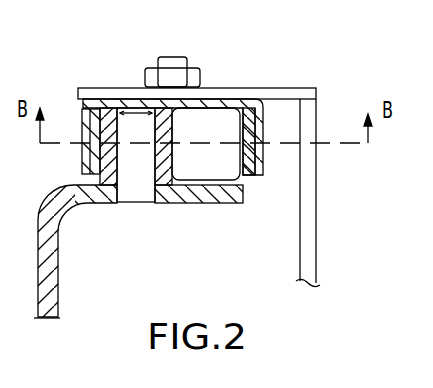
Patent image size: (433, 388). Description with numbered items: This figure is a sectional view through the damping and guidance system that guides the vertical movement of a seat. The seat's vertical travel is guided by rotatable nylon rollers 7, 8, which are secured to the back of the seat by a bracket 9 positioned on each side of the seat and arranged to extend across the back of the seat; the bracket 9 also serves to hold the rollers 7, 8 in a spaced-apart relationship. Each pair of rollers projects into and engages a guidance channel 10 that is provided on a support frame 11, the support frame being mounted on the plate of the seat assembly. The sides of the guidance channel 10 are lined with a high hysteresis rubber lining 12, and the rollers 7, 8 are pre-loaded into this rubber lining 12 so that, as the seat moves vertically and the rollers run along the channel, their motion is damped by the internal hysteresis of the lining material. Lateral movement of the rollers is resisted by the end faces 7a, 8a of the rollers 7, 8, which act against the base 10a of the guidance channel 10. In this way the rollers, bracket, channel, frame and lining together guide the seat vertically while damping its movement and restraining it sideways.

The rotatable nylon roller 7 is at (208, 177).
The end face of roller 7a is at (216, 113).
The rotatable nylon roller 8 is at (175, 128).
The end face of roller 8a is at (112, 108).
The bracket 9 is at (50, 255).
The guidance channel 10 is at (211, 100).
The base of guidance channel 10a is at (135, 107).
The support frame 11 is at (315, 262).
The high hysteresis rubber lining 12 is at (100, 128).